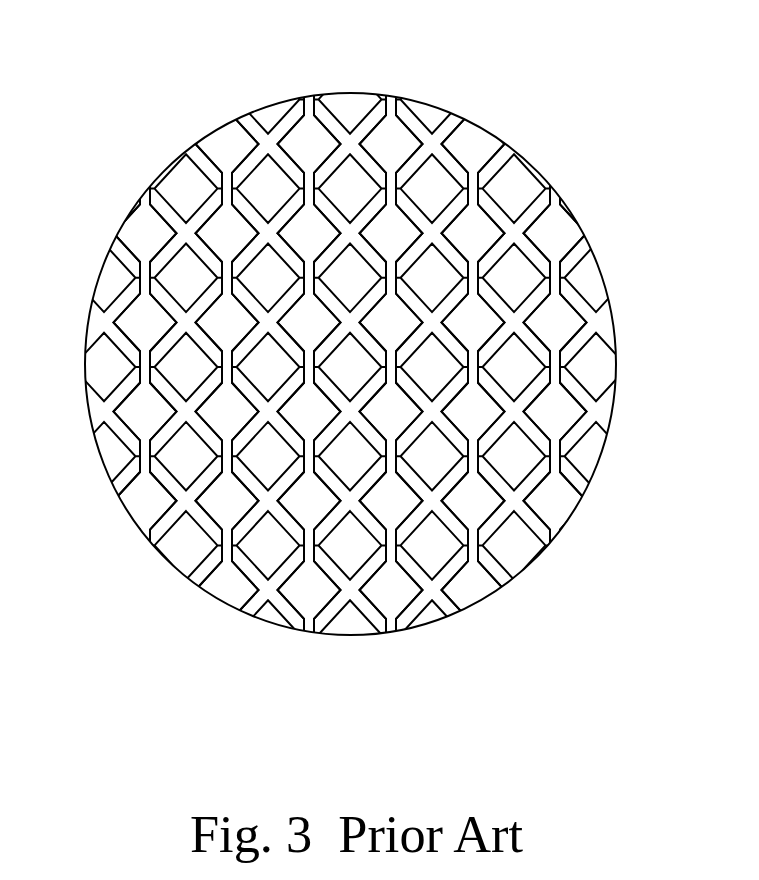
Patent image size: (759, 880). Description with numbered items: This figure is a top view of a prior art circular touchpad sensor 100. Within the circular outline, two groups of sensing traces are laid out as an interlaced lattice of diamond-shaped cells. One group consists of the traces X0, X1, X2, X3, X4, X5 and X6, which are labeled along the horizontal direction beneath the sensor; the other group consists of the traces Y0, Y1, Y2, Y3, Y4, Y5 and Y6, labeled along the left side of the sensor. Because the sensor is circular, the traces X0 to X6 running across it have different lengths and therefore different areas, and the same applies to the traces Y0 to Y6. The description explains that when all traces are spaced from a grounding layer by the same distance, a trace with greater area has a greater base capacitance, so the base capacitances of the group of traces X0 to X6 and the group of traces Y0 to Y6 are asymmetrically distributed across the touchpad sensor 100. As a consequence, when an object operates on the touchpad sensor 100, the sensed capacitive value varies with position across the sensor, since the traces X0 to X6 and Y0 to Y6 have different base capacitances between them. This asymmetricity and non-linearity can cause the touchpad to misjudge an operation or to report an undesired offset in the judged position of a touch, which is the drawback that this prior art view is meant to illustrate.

The circular touchpad sensor 100 is at (375, 370).
The trace X0 is at (132, 370).
The trace X1 is at (186, 370).
The trace X2 is at (268, 370).
The trace X3 is at (350, 370).
The trace X4 is at (432, 370).
The trace X5 is at (514, 370).
The trace X6 is at (567, 370).
The trace Y0 is at (335, 634).
The trace Y1 is at (335, 545).
The trace Y2 is at (335, 456).
The trace Y3 is at (335, 367).
The trace Y4 is at (335, 277).
The trace Y5 is at (335, 190).
The trace Y6 is at (335, 106).